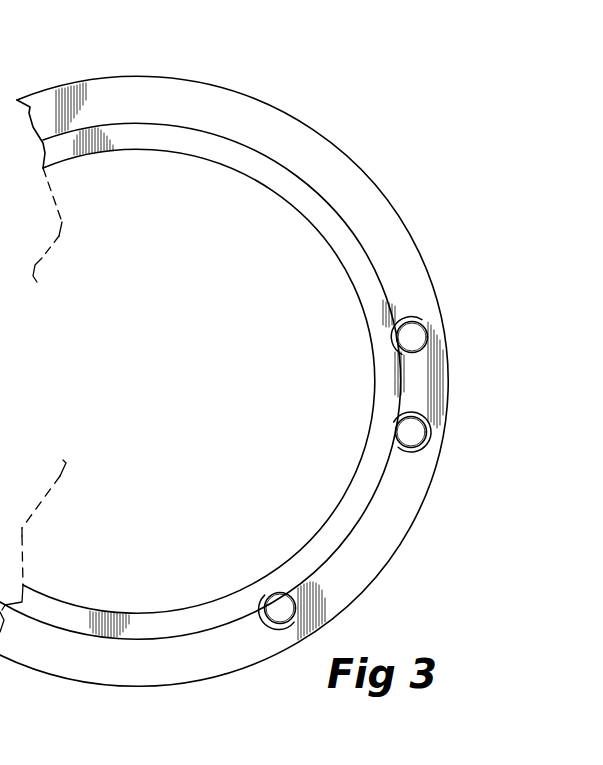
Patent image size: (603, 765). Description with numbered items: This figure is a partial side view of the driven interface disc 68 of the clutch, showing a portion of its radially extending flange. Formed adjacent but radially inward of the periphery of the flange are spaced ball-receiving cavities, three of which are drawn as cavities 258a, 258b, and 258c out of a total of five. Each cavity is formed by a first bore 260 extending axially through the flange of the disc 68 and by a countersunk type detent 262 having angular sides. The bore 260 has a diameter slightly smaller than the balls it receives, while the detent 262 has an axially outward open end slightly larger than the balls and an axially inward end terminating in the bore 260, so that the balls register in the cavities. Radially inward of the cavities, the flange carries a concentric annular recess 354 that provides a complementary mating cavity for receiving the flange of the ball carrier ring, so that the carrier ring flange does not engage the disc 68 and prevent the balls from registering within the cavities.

The driven interface disc 68 is at (330, 104).
The annular recess 354 is at (289, 181).
The ball-receiving cavity 258a is at (414, 340).
The ball-receiving cavity 258b is at (418, 437).
The ball-receiving cavity 258c is at (283, 608).
The first bore 260 is at (402, 338).
The countersunk type detent 262 is at (422, 320).